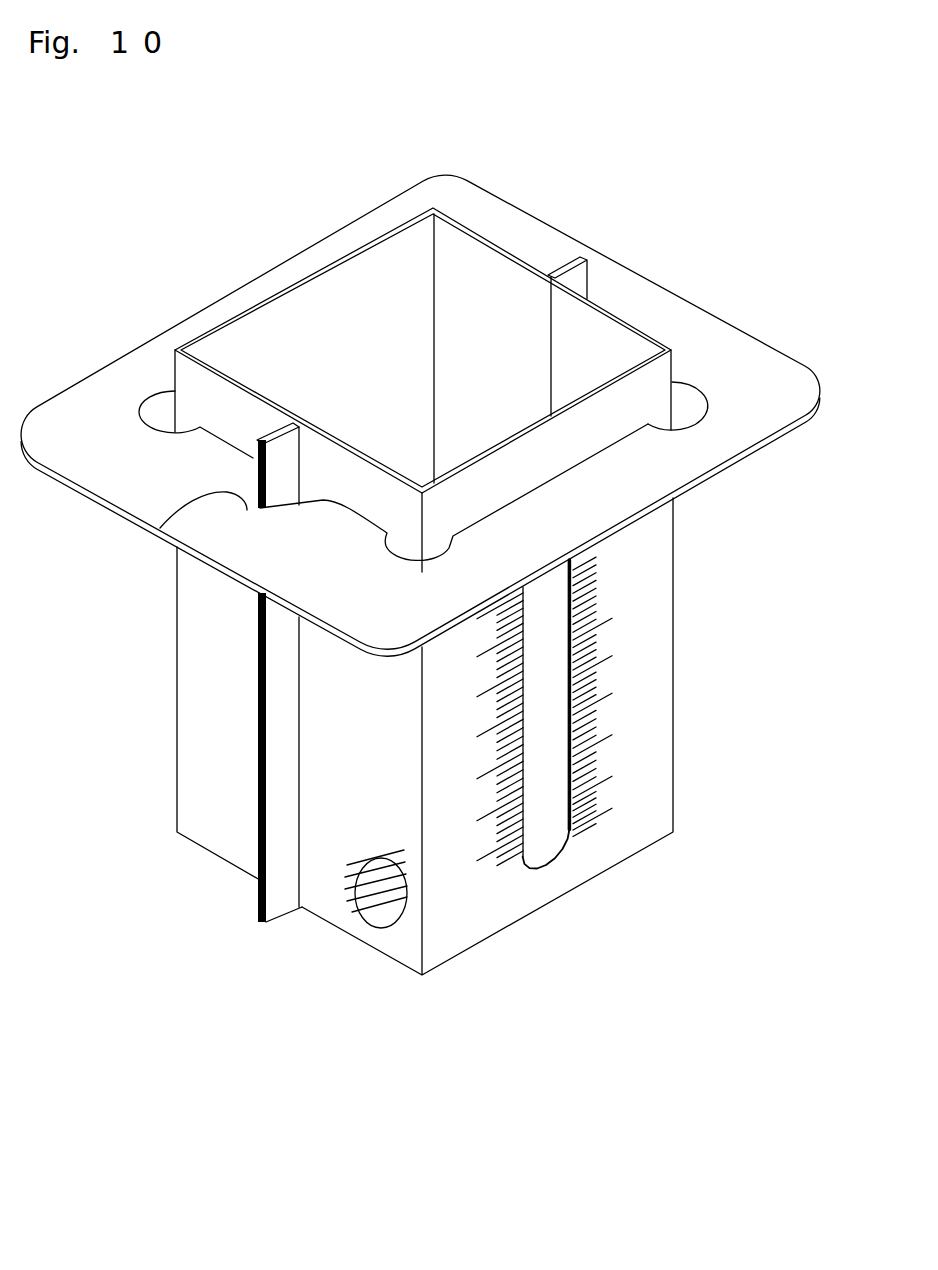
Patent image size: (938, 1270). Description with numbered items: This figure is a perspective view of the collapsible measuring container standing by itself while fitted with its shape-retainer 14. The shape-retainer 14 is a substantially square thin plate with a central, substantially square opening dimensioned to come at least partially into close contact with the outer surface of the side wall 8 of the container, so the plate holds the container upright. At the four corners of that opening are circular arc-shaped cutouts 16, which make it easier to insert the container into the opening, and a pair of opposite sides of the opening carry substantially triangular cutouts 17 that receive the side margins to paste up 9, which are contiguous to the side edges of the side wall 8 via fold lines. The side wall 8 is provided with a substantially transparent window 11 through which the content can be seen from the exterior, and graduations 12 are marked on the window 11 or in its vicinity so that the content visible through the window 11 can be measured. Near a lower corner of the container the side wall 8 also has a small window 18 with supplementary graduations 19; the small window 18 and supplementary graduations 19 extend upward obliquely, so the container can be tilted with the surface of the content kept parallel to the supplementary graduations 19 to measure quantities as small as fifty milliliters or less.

The side wall 8 is at (447, 940).
The side margin to paste up 9 is at (277, 903).
The window 11 is at (537, 838).
The graduations 12 is at (468, 842).
The shape-retainer 14 is at (645, 292).
The circular arc-shaped cutout 16 is at (703, 392).
The triangular cutout 17 is at (160, 528).
The small window 18 is at (387, 907).
The supplementary graduations 19 is at (347, 895).